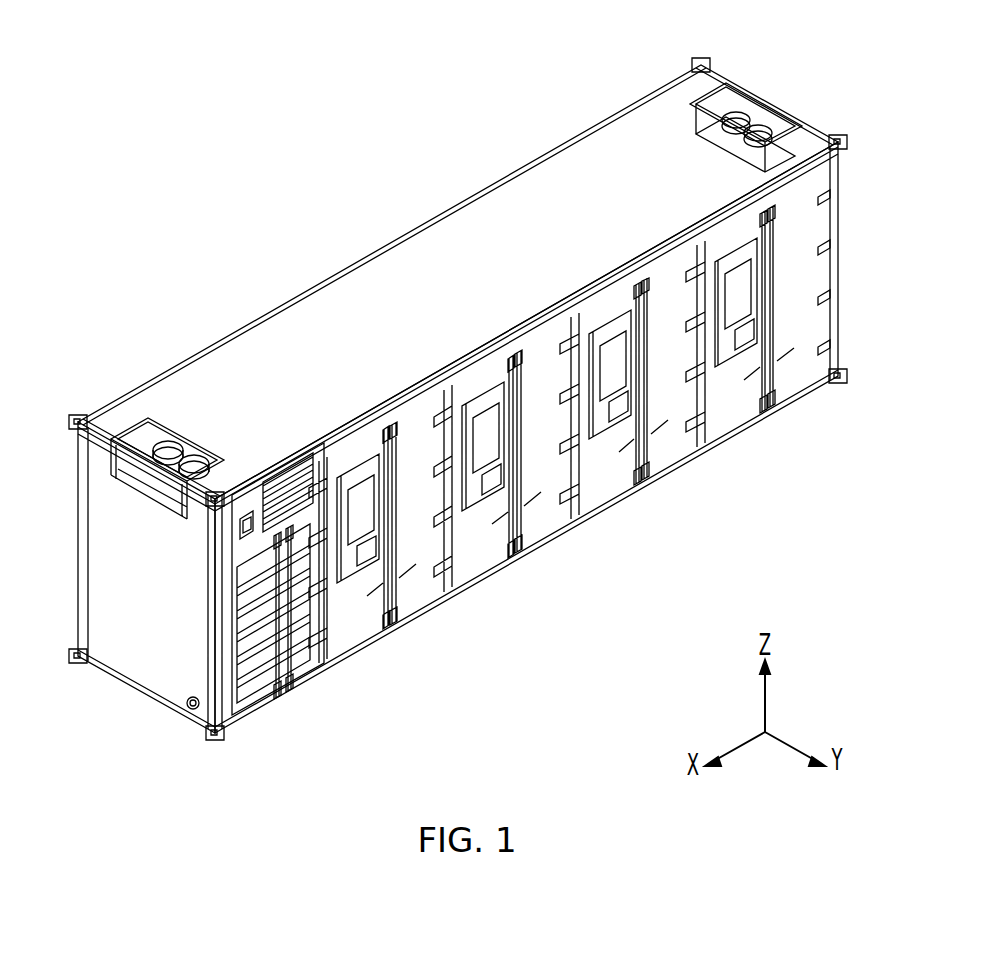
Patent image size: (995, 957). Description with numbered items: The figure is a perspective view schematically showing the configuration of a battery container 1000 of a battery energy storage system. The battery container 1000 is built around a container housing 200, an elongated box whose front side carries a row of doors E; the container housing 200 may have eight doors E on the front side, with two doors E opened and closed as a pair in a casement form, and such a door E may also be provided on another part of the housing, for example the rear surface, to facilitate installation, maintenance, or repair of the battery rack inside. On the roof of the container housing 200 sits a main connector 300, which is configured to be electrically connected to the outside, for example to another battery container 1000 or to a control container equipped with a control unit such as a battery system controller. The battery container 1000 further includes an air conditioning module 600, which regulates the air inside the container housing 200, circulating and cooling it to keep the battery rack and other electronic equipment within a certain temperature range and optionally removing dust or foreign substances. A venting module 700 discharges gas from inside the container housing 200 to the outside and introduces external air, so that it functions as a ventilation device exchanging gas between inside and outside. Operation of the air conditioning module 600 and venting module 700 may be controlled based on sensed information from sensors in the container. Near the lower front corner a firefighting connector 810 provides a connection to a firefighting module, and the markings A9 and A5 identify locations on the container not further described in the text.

The battery container 1000 is at (449, 414).
The container housing 200 is at (449, 414).
The main connector 300 is at (185, 455).
The venting module 700 is at (292, 500).
The air conditioning module 600 is at (348, 570).
The door E is at (410, 545).
The locking bar A9 is at (300, 668).
The corner fitting A5 is at (195, 710).
The firefighting connector 810 is at (188, 706).